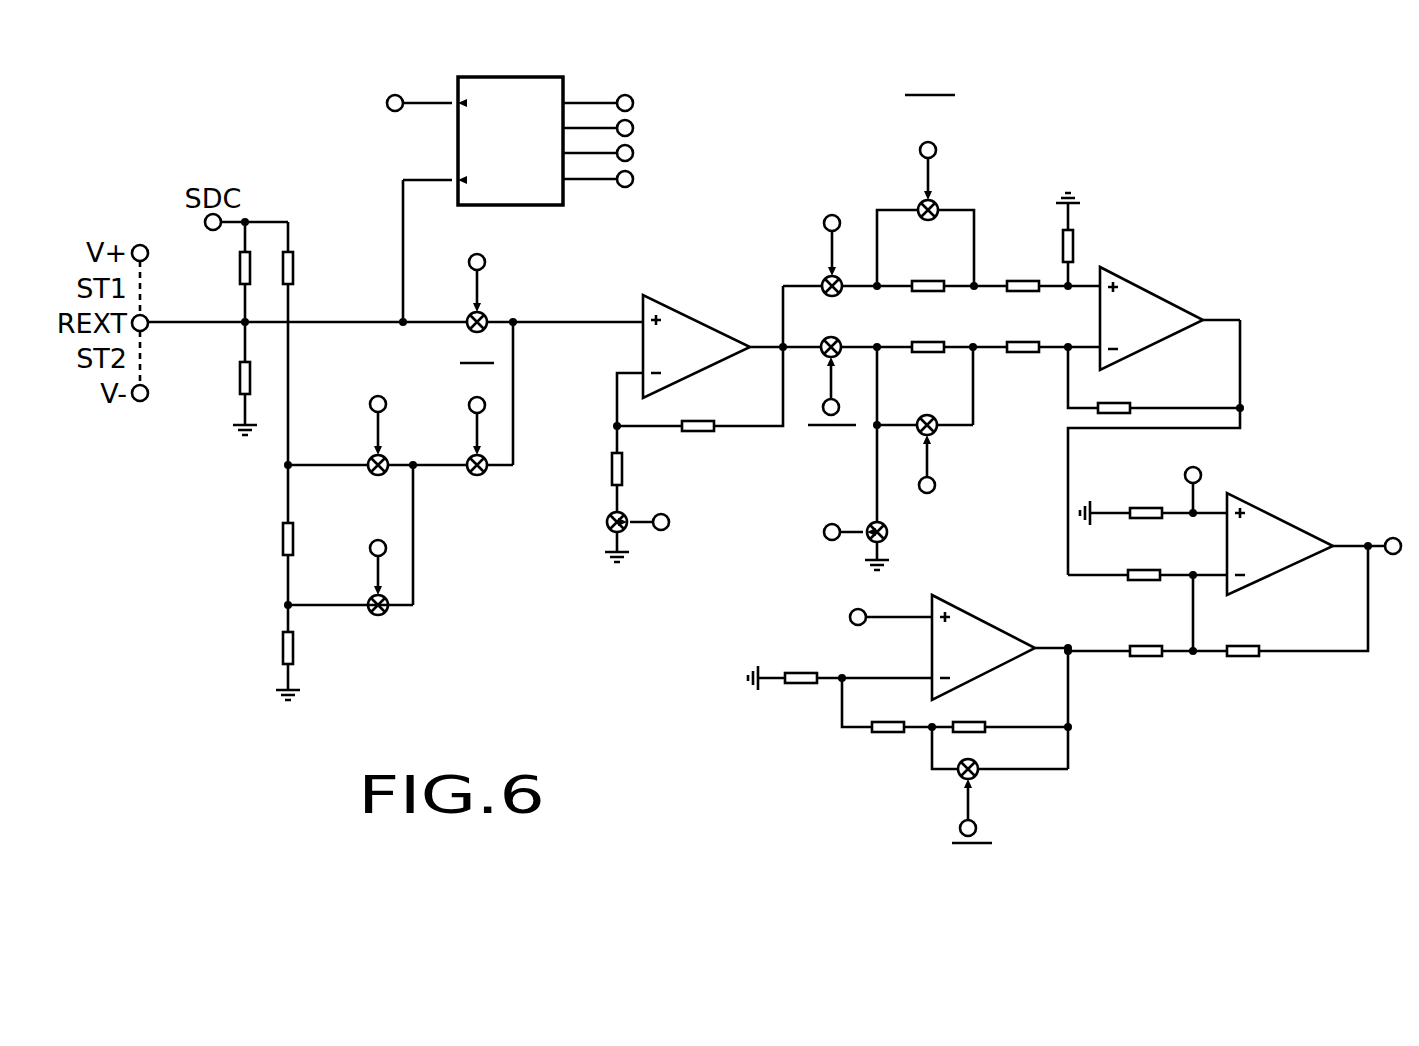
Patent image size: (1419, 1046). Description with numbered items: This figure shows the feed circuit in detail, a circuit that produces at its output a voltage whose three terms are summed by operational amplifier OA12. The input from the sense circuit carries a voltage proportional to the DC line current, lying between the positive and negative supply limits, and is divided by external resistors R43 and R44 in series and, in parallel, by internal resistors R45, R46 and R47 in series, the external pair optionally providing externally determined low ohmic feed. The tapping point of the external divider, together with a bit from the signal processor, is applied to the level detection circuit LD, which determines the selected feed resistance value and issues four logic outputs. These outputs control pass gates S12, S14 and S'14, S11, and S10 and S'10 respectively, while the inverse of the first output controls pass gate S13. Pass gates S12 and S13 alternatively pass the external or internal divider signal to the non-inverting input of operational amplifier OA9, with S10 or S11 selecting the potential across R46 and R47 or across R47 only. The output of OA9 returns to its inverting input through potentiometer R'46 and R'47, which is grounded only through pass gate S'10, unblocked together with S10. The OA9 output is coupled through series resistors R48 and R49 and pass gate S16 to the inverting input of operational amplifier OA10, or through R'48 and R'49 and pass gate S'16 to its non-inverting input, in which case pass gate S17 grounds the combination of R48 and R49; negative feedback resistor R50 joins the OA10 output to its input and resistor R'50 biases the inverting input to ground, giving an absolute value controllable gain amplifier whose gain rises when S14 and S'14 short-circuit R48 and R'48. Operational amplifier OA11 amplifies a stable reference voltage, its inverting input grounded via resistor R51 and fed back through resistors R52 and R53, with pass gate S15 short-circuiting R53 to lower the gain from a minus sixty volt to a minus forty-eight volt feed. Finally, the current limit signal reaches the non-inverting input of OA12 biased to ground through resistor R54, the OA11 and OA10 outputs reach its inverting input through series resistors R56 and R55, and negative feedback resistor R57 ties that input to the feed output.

The resistor R43 is at (214, 272).
The resistor R44 is at (218, 378).
The resistor R45 is at (318, 343).
The resistor R46 is at (258, 535).
The resistor R47 is at (261, 652).
The resistor R'46 is at (700, 412).
The resistor R'47 is at (574, 469).
The series resistor R48 is at (926, 331).
The series resistor R49 is at (1021, 331).
The series resistor R'48 is at (927, 269).
The series resistor R'49 is at (1022, 269).
The negative feedback resistor R50 is at (1154, 447).
The resistor R'50 is at (1100, 239).
The resistor R51 is at (840, 665).
The negative feedback resistor R52 is at (887, 705).
The negative feedback resistor R53 is at (1000, 710).
The resistor R54 is at (1153, 479).
The series resistor R55 is at (1147, 593).
The series resistor R56 is at (1130, 634).
The negative feedback resistor R57 is at (1280, 601).
The pass gate S10 is at (360, 419).
The pass gate S11 is at (350, 540).
The pass gate S12 is at (459, 277).
The pass gate S13 is at (459, 419).
The pass gate S14 is at (933, 438).
The pass gate S'14 is at (938, 174).
The pass gate S15 is at (1000, 801).
The pass gate S16 is at (825, 382).
The pass gate S'16 is at (811, 239).
The pass gate S17 is at (852, 543).
The pass gate S'10 is at (635, 534).
The operational amplifier OA9 is at (760, 346).
The operational amplifier OA10 is at (1170, 318).
The operational amplifier OA11 is at (923, 682).
The operational amplifier OA12 is at (1318, 544).
The level detection circuit LD is at (527, 199).